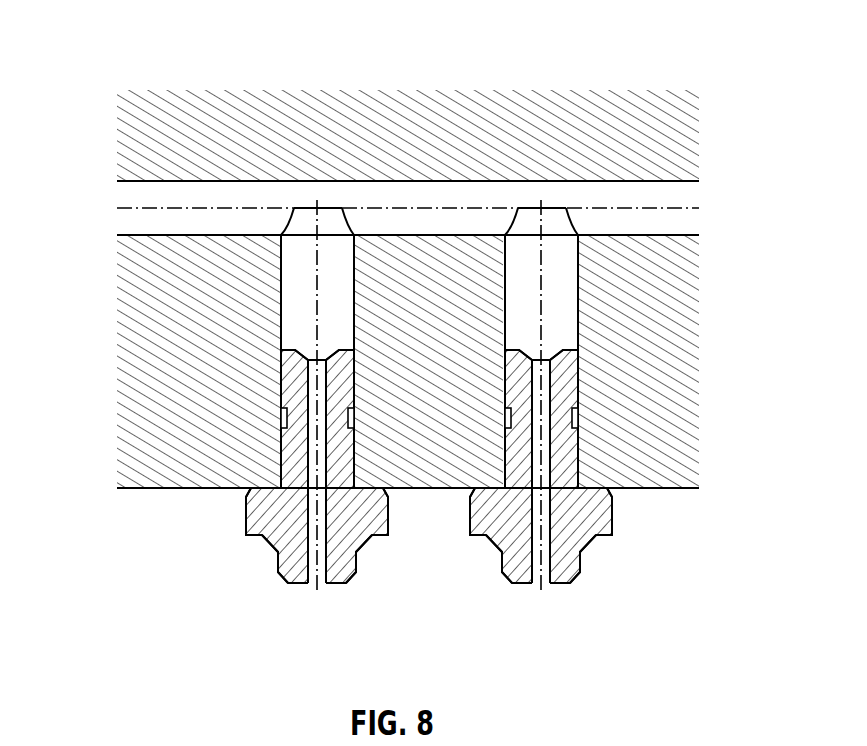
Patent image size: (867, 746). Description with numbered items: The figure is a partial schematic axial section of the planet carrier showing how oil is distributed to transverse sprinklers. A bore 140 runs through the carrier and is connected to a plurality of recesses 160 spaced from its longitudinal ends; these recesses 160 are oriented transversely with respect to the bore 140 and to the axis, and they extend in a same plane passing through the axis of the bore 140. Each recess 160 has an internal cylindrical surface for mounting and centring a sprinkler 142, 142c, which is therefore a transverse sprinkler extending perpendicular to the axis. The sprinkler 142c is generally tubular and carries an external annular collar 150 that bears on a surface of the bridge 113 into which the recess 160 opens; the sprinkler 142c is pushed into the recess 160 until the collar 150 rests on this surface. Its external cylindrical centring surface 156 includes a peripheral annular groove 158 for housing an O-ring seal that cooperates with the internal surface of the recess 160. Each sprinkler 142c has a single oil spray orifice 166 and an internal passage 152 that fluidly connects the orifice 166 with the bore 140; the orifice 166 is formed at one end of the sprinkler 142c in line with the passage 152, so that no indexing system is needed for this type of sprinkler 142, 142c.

The bridge 113 is at (708, 141).
The bore 140 is at (640, 218).
The sprinkler 142 is at (541, 600).
The transverse sprinkler 142c is at (350, 590).
The external annular collar 150 is at (490, 523).
The internal passage 152 is at (248, 537).
The external cylindrical centring surface 156 is at (280, 457).
The peripheral annular groove 158 is at (282, 418).
The recess 160 is at (502, 300).
The oil spray orifice 166 is at (311, 585).